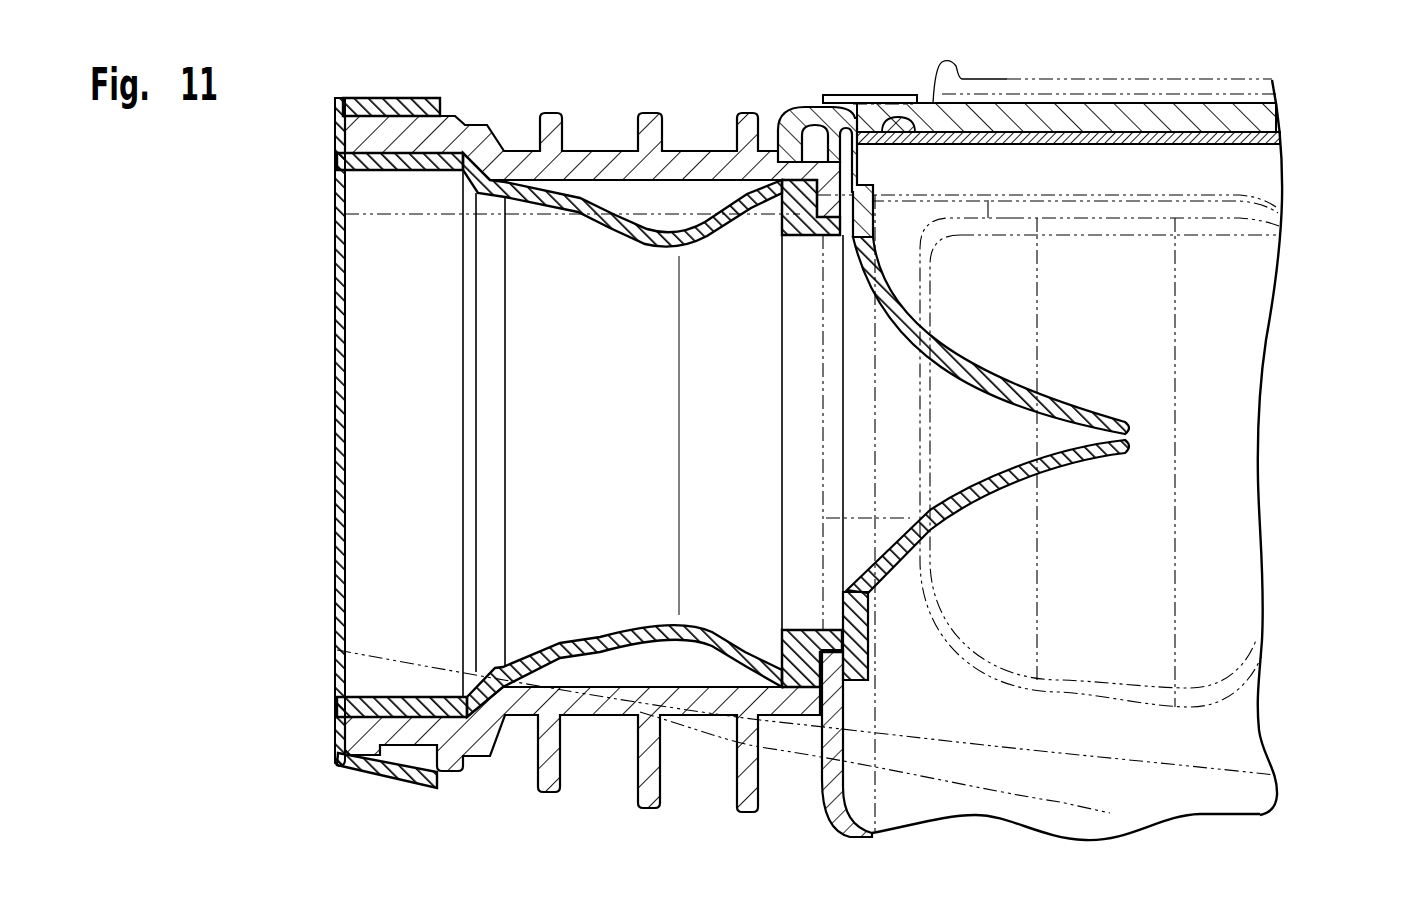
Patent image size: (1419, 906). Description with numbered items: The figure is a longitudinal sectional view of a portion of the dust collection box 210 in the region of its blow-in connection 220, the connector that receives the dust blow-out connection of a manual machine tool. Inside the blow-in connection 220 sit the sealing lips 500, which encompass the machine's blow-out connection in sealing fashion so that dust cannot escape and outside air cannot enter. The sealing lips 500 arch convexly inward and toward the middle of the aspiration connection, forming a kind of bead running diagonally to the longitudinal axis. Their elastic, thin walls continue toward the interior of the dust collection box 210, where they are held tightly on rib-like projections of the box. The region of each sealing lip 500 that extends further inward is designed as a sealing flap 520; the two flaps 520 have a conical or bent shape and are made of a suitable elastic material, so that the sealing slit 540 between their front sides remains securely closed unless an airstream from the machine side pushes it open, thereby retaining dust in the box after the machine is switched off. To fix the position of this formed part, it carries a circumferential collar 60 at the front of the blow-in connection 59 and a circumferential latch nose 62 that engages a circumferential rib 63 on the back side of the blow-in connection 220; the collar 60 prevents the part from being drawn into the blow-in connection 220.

The dust collection box 210 is at (1320, 94).
The blow-in connection 220 is at (603, 163).
The sealing lips 500 is at (627, 223).
The sealing flap 520 is at (1067, 412).
The sealing slit 540 is at (1066, 432).
The front of the blow-in connection 59 is at (334, 586).
The circumferential collar 60 is at (352, 775).
The circumferential latch nose 62 is at (866, 652).
The circumferential rib 63 is at (845, 697).